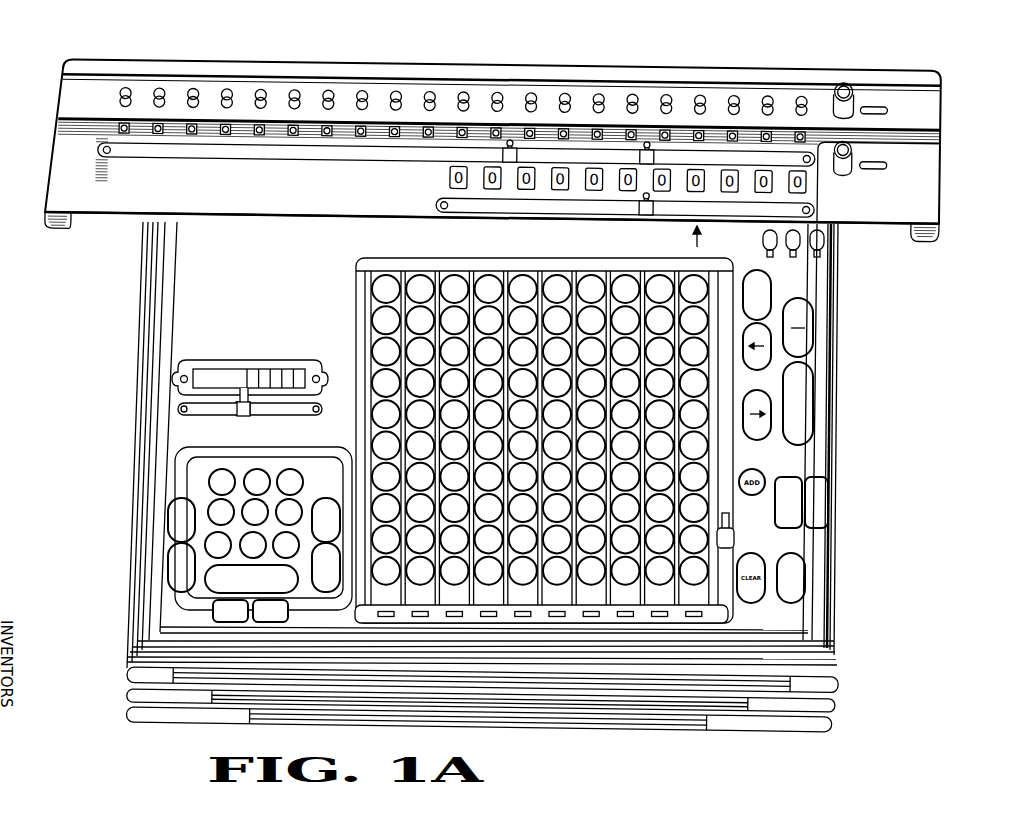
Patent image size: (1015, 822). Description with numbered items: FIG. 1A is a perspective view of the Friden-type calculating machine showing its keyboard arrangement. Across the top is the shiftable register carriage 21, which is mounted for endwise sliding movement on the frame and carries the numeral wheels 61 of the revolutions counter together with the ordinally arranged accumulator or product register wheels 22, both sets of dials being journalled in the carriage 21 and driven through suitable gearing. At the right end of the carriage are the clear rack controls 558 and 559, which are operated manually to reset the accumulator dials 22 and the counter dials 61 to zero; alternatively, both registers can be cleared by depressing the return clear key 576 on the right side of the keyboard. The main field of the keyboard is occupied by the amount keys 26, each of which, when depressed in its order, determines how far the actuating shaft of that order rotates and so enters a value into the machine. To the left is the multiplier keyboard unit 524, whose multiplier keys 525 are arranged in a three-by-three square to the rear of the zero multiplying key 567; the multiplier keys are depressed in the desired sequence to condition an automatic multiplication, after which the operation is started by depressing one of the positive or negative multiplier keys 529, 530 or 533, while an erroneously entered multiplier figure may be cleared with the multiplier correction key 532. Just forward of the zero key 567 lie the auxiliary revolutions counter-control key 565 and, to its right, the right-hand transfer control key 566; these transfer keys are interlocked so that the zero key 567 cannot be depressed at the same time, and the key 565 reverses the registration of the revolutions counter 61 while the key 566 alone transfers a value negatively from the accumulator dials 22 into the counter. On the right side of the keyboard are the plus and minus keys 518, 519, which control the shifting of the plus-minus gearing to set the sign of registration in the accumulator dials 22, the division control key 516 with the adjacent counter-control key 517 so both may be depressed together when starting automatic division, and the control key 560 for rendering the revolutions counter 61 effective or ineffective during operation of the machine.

The register carriage 21 is at (958, 90).
The accumulator or product register wheels 22 is at (112, 118).
The clear rack control 558 is at (843, 84).
The clear rack control 559 is at (848, 162).
The numeral wheels of revolutions counter 61 is at (806, 186).
The amount key 26 is at (521, 537).
The multiplier keyboard unit 524 is at (180, 425).
The multiplier keys 525 is at (209, 481).
The zero multiplying key 567 is at (212, 578).
The negative multiplier key 533 is at (174, 510).
The multiplier key 530 is at (174, 548).
The multiplier correction key 532 is at (324, 500).
The multiplier key 529 is at (325, 592).
The auxiliary revolutions counter-control key 565 is at (222, 610).
The right-hand transfer control key 566 is at (273, 622).
The control key 560 is at (797, 250).
The minus key 519 is at (802, 340).
The plus key 518 is at (801, 404).
The division control key 516 is at (787, 478).
The counter-control key 517 is at (819, 527).
The return clear key 576 is at (800, 579).